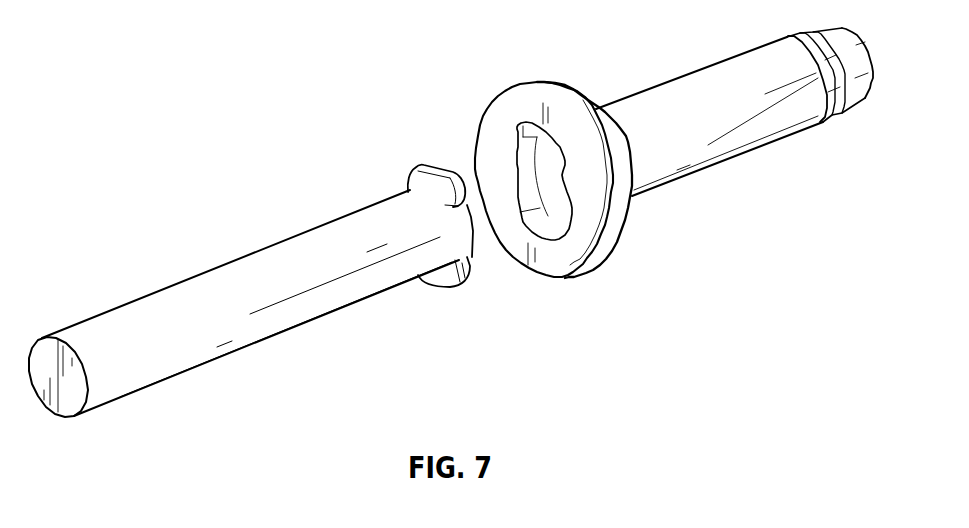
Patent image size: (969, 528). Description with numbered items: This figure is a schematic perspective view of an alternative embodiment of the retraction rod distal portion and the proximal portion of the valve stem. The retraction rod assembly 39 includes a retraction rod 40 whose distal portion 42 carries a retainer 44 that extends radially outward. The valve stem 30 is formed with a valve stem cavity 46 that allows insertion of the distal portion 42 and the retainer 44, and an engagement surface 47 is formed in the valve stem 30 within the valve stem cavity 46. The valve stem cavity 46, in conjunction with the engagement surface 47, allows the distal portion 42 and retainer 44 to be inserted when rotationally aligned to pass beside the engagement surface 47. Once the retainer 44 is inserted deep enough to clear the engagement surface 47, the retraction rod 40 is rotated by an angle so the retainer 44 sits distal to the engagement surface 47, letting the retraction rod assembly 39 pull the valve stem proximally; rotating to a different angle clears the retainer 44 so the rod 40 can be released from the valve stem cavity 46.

The valve stem 30 is at (743, 58).
The retraction rod assembly 39 is at (128, 212).
The retraction rod 40 is at (272, 254).
The distal portion 42 is at (479, 277).
The retainer 44 is at (432, 165).
The valve stem cavity 46 is at (510, 157).
The engagement surface 47 is at (510, 157).